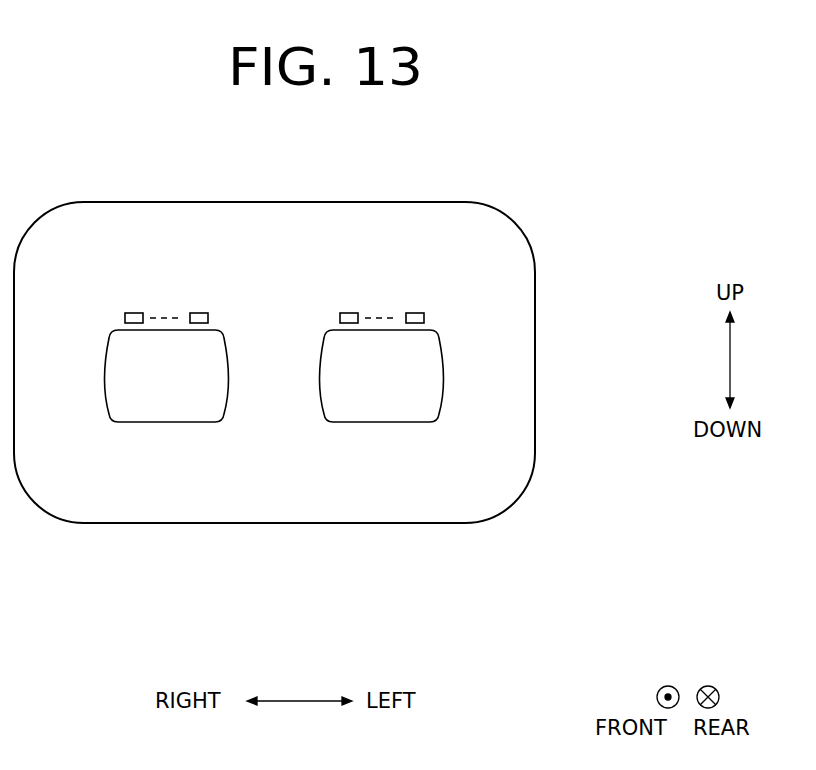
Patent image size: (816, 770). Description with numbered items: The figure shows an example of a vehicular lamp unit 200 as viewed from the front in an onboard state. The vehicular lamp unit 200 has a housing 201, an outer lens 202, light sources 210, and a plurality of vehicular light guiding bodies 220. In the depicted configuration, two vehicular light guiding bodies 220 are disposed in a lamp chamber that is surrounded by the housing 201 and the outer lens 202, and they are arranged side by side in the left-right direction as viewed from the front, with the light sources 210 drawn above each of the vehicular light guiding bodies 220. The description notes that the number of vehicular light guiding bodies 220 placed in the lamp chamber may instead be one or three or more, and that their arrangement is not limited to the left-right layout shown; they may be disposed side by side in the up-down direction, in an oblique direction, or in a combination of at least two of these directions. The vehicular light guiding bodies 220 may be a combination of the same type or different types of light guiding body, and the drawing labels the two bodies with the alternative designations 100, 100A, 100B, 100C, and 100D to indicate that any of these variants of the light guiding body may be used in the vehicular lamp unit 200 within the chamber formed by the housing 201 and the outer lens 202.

The vehicular lamp unit 200 is at (316, 329).
The housing 201 is at (535, 359).
The outer lens 202 is at (520, 478).
The light sources 210 is at (198, 313).
The vehicular light guiding bodies 220 is at (269, 480).
The optical unit 100 is at (274, 376).
The optical unit variant A 100A is at (274, 376).
The optical unit variant B 100B is at (274, 376).
The optical unit variant C 100C is at (274, 376).
The optical unit variant D 100D is at (145, 423).